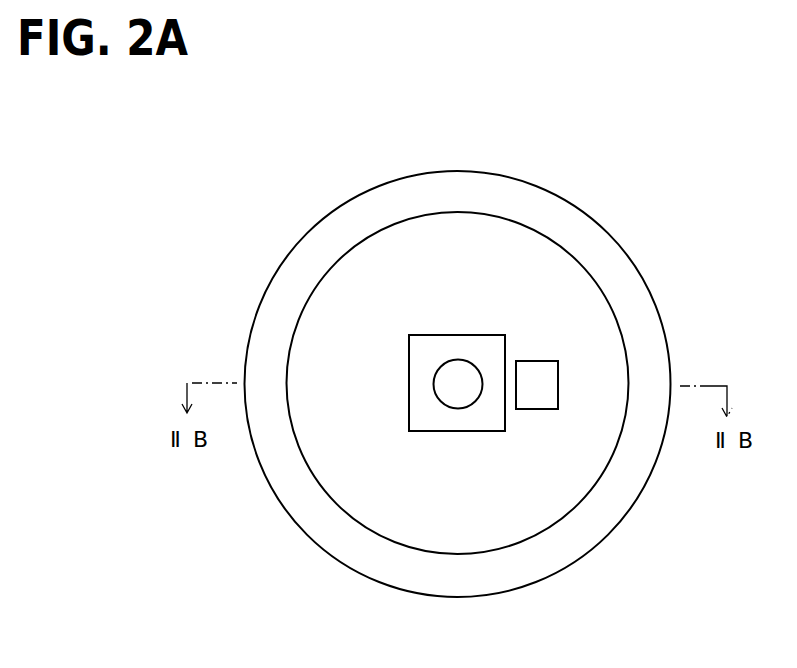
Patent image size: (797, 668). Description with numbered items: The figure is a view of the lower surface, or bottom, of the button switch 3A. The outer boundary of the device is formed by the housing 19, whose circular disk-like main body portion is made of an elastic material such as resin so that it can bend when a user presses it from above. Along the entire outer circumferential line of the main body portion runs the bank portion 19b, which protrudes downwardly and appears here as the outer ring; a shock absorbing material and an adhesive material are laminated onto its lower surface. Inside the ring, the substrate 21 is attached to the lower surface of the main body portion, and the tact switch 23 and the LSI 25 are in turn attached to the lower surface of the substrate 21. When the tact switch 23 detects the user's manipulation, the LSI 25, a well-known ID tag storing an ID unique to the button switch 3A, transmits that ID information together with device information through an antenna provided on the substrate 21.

The button switch 3A is at (199, 276).
The housing 19 is at (647, 288).
The bank portion 19b is at (645, 337).
The substrate 21 is at (530, 240).
The tact switch 23 is at (442, 385).
The LSI 25 is at (544, 393).